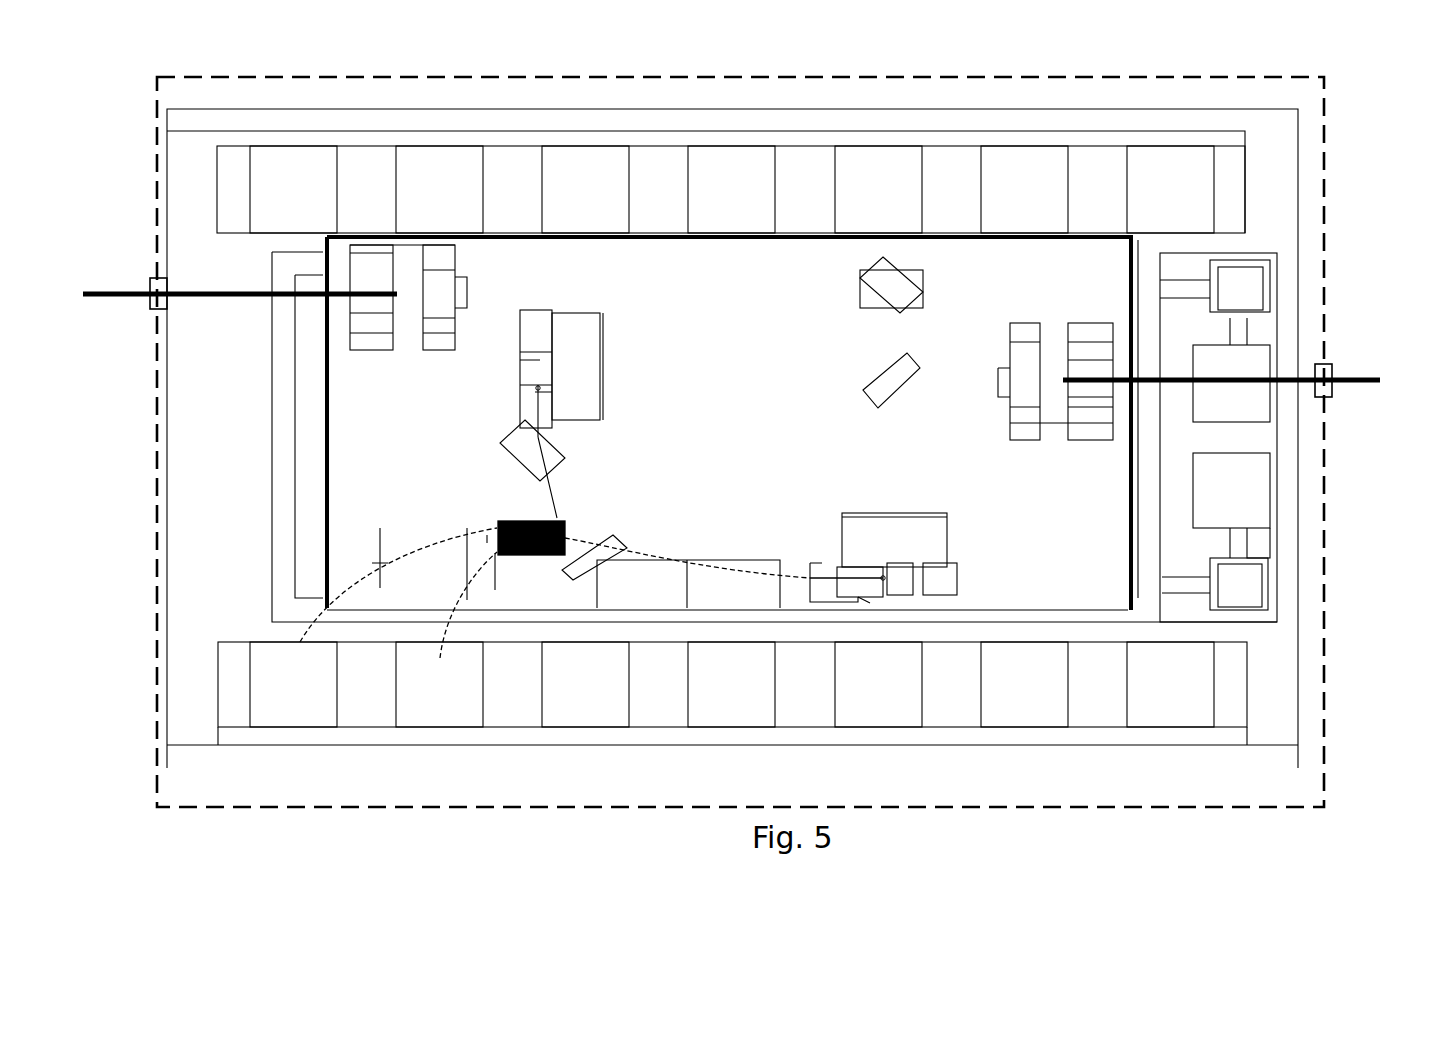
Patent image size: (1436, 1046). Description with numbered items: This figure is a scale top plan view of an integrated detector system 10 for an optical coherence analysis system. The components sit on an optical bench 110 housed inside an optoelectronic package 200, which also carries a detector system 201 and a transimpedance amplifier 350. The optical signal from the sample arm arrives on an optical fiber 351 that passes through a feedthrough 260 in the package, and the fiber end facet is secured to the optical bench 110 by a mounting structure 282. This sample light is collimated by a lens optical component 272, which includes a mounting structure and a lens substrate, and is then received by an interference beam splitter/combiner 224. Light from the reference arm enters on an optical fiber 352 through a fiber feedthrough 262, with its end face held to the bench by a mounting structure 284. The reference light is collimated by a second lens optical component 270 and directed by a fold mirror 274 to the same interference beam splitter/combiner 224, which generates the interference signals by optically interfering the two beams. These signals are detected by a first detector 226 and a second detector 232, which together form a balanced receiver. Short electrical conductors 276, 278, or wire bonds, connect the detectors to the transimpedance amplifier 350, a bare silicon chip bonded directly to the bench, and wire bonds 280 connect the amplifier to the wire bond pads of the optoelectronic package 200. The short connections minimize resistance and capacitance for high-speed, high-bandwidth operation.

The integrated detector system 10 is at (1340, 123).
The optical bench 110 is at (330, 477).
The optoelectronic package 200 is at (732, 458).
The detector system 201 is at (781, 266).
The interference beam splitter/combiner 224 is at (883, 370).
The first detector 226 is at (580, 418).
The second detector 232 is at (842, 538).
The feedthrough 260 is at (1322, 390).
The fiber feedthrough 262 is at (156, 312).
The second lens optical component 270 is at (455, 258).
The lens optical component 272 is at (1016, 337).
The fold mirror 274 is at (888, 295).
The electrical conductor 276 is at (538, 442).
The electrical conductor 278 is at (727, 573).
The wire bonds 280 is at (458, 588).
The mounting structure 282 is at (1092, 322).
The mounting structure 284 is at (377, 253).
The transimpedance amplifier 350 is at (532, 521).
The optical fiber 351 is at (1175, 380).
The optical fiber 352 is at (281, 292).